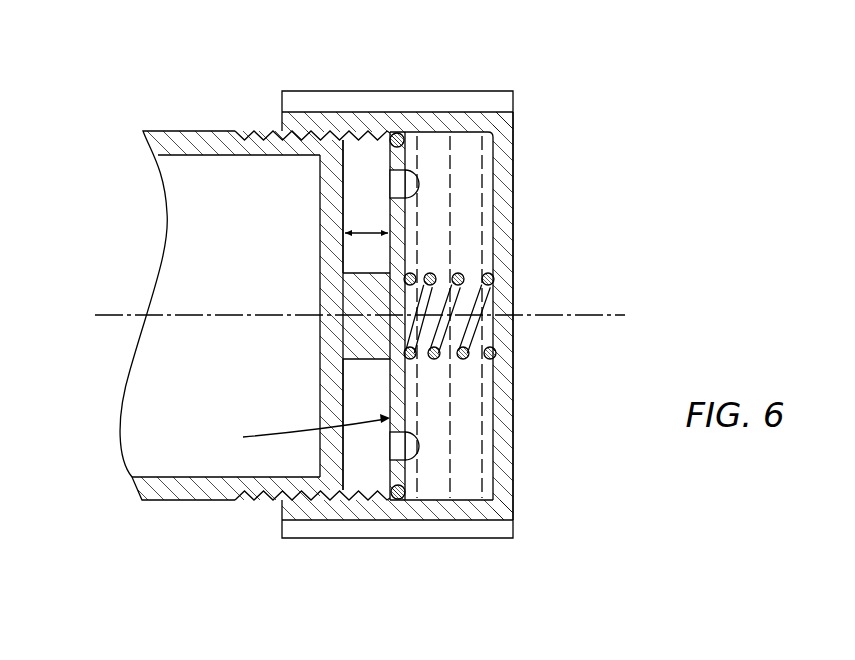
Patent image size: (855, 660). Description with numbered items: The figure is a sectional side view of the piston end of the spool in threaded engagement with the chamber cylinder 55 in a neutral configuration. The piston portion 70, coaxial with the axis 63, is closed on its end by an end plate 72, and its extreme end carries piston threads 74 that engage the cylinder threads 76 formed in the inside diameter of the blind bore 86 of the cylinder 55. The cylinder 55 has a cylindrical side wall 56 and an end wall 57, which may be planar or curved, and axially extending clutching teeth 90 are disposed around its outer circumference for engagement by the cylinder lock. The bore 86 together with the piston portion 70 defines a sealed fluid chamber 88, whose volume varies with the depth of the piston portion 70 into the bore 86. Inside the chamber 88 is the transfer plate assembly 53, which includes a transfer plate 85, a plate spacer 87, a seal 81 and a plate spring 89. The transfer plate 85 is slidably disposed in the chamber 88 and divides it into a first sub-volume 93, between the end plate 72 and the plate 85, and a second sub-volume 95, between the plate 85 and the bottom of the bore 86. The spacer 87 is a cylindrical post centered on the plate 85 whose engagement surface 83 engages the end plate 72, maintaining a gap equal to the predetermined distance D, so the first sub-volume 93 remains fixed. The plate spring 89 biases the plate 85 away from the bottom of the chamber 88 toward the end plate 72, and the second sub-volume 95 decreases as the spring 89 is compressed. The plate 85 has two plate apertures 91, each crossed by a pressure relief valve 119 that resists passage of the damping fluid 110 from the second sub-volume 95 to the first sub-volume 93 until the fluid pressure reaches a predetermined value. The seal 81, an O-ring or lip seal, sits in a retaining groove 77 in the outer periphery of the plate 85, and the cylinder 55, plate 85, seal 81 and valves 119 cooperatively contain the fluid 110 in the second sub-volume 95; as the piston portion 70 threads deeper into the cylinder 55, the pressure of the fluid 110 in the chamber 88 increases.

The transfer plate assembly 53 is at (300, 432).
The chamber cylinder 55 is at (515, 445).
The cylindrical side wall 56 is at (303, 522).
The end wall 57 is at (515, 200).
The axis 63 is at (100, 312).
The piston portion 70 is at (173, 130).
The end plate 72 is at (347, 187).
The piston threads 74 is at (243, 131).
The cylinder threads 76 is at (385, 447).
The retaining groove 77 is at (398, 464).
The seal 81 is at (395, 502).
The engagement surface 83 is at (345, 328).
The transfer plate 85 is at (405, 158).
The blind bore 86 is at (493, 422).
The plate spacer 87 is at (360, 360).
The fluid chamber 88 is at (482, 253).
The plate spring 89 is at (490, 284).
The clutching teeth 90 is at (480, 91).
The plate apertures 91 is at (390, 183).
The first sub-volume 93 is at (352, 152).
The second sub-volume 95 is at (462, 480).
The damping fluid 110 is at (440, 203).
The pressure relief valve 119 is at (418, 182).
The predetermined distance D is at (366, 238).